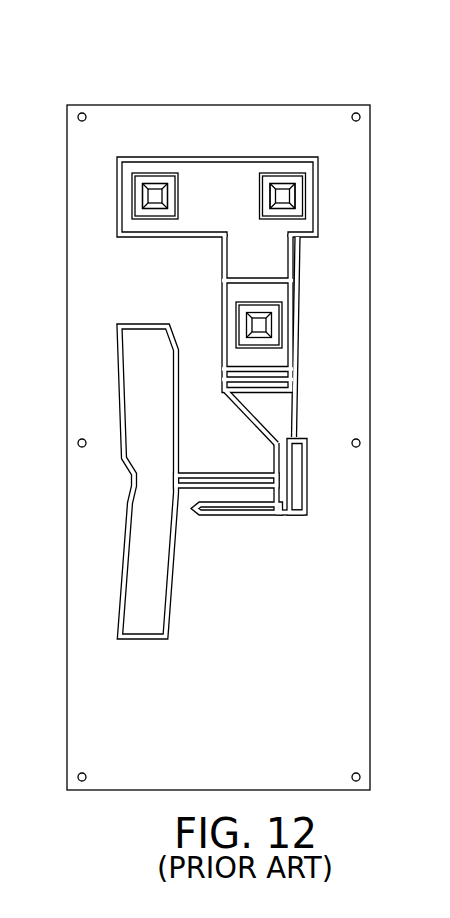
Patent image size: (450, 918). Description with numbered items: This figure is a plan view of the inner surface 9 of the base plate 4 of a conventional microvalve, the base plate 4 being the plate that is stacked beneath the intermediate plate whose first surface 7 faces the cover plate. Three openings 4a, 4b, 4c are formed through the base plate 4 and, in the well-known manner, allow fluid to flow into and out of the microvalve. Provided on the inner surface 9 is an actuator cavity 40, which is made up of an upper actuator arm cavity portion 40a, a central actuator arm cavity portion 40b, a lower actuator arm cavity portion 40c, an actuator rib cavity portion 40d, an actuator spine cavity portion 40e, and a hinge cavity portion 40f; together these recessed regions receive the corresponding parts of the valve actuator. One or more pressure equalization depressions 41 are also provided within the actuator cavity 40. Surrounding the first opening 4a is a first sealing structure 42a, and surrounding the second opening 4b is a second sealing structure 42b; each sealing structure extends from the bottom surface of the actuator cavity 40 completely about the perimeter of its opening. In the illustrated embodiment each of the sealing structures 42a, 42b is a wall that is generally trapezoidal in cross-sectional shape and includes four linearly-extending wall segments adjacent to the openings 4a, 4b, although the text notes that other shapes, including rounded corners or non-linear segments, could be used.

The base plate 4 is at (131, 104).
The first surface 7 is at (257, 125).
The inner surface 9 is at (338, 125).
The first opening 4a is at (148, 190).
The second opening 4b is at (290, 200).
The third opening 4c is at (260, 328).
The actuator cavity 40 is at (219, 352).
The upper actuator arm cavity portion 40a is at (207, 221).
The central actuator arm cavity portion 40b is at (277, 355).
The lower actuator arm cavity portion 40c is at (285, 433).
The actuator rib cavity portion 40d is at (140, 598).
The actuator spine cavity portion 40e is at (227, 473).
The hinge cavity portion 40f is at (232, 516).
The pressure equalization depressions 41 is at (261, 287).
The first sealing structure 42a is at (142, 206).
The second sealing structure 42b is at (299, 206).